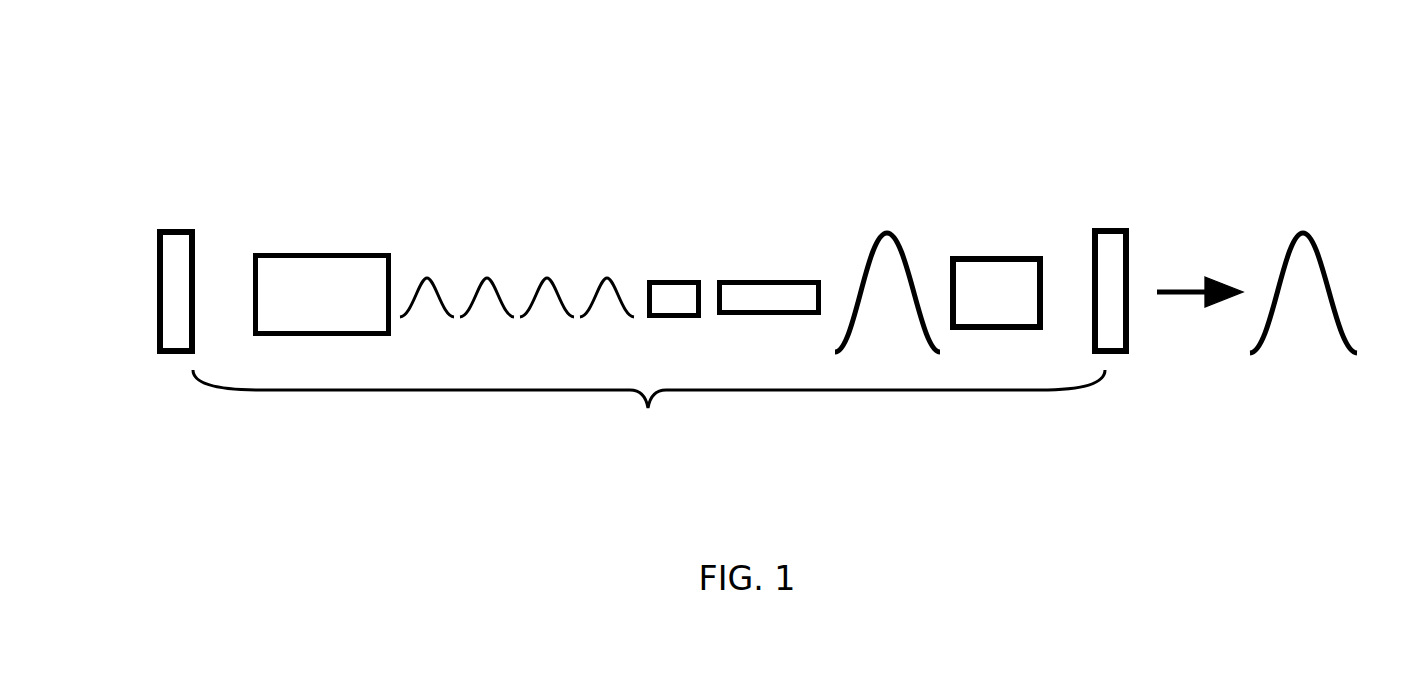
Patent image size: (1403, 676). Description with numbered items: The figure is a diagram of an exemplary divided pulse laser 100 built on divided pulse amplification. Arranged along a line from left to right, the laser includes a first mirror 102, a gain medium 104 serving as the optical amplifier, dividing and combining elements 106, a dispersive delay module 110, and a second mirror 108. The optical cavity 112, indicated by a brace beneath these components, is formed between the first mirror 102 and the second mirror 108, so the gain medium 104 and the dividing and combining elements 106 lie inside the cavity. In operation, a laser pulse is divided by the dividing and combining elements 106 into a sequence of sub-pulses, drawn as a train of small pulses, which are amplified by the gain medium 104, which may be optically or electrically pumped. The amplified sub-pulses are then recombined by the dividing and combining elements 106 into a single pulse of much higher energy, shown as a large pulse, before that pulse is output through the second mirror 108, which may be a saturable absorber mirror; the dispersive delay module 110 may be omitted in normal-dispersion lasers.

The divided pulse laser 100 is at (753, 237).
The first mirror 102 is at (176, 255).
The gain medium 104 is at (322, 245).
The dividing and combining elements 106 is at (657, 280).
The second mirror 108 is at (1113, 260).
The dispersive delay module 110 is at (992, 247).
The optical cavity 112 is at (649, 406).